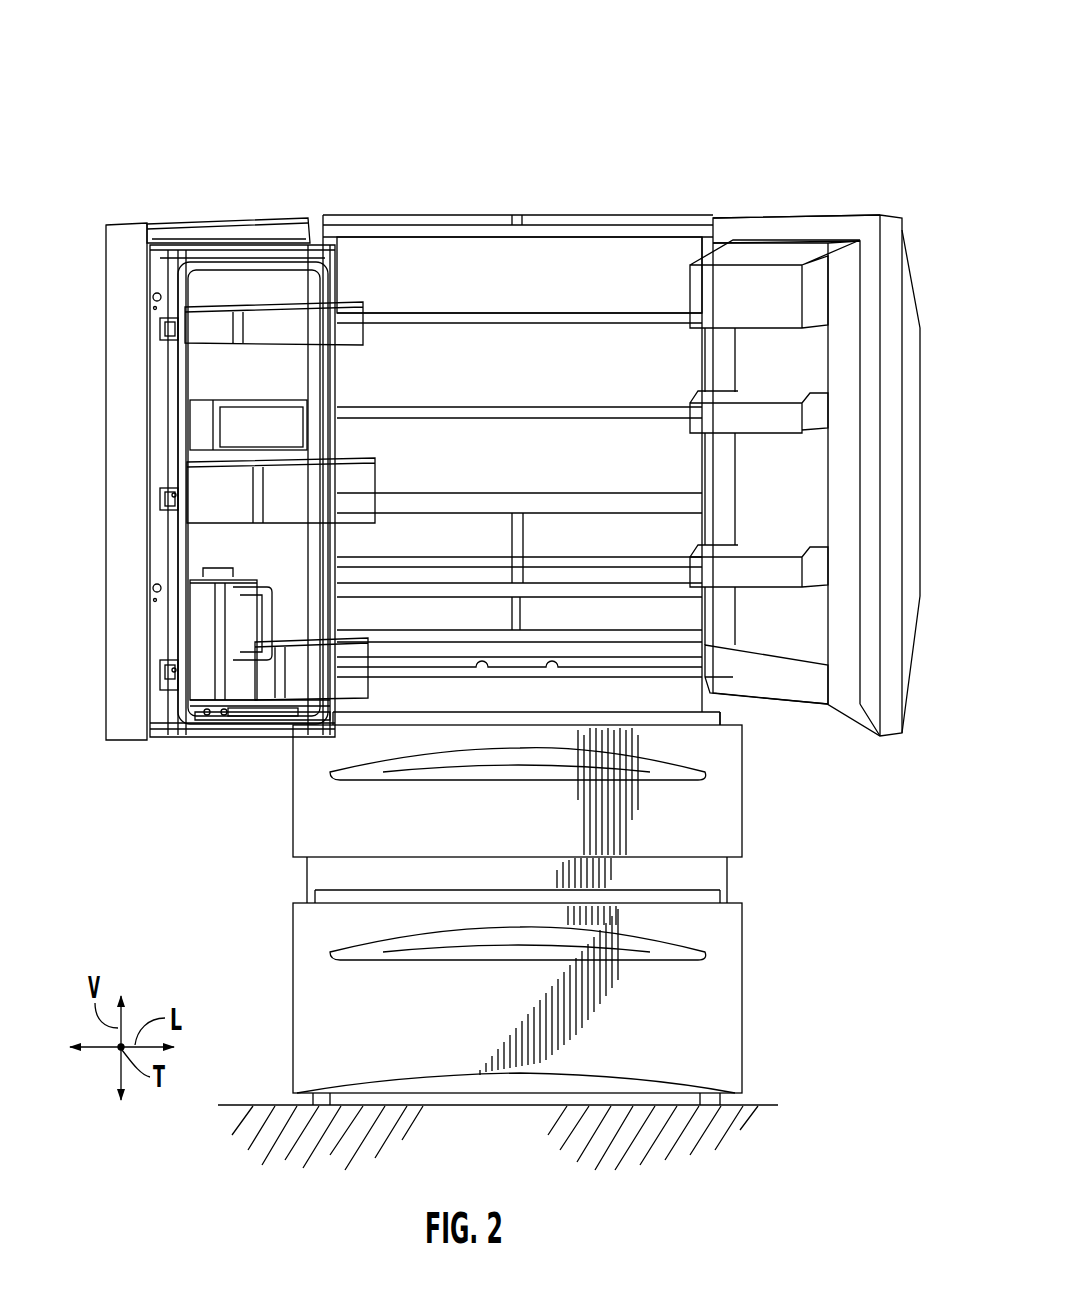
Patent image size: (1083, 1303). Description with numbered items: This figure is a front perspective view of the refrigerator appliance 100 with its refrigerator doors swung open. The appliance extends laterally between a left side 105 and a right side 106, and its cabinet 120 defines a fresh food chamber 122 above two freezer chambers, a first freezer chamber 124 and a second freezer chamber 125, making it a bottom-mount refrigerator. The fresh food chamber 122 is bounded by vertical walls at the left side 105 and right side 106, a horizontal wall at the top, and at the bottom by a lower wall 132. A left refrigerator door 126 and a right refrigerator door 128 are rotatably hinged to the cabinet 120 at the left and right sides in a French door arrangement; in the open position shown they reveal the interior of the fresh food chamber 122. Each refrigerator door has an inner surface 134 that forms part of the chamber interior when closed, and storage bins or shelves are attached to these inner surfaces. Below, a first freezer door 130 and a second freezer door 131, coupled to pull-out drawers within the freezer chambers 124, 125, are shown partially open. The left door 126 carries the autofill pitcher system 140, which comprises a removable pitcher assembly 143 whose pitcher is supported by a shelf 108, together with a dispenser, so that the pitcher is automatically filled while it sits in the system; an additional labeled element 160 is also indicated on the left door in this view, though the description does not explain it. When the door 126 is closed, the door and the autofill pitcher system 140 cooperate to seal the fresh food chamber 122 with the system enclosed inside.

The refrigerator appliance 100 is at (677, 70).
The left side 105 is at (341, 213).
The right side 106 is at (741, 196).
The shelf 108 is at (200, 693).
The cabinet 120 is at (305, 875).
The fresh food chamber 122 is at (585, 267).
The first freezer chamber 124 is at (385, 717).
The second freezer chamber 125 is at (355, 893).
The left refrigerator door 126 is at (275, 222).
The right refrigerator door 128 is at (808, 213).
The first freezer door 130 is at (718, 815).
The second freezer door 131 is at (712, 1003).
The lower wall 132 is at (660, 703).
The inner surface 134 is at (237, 231).
The autofill pitcher system 140 is at (172, 627).
The pitcher assembly 143 is at (207, 683).
The water pitcher 160 is at (207, 553).